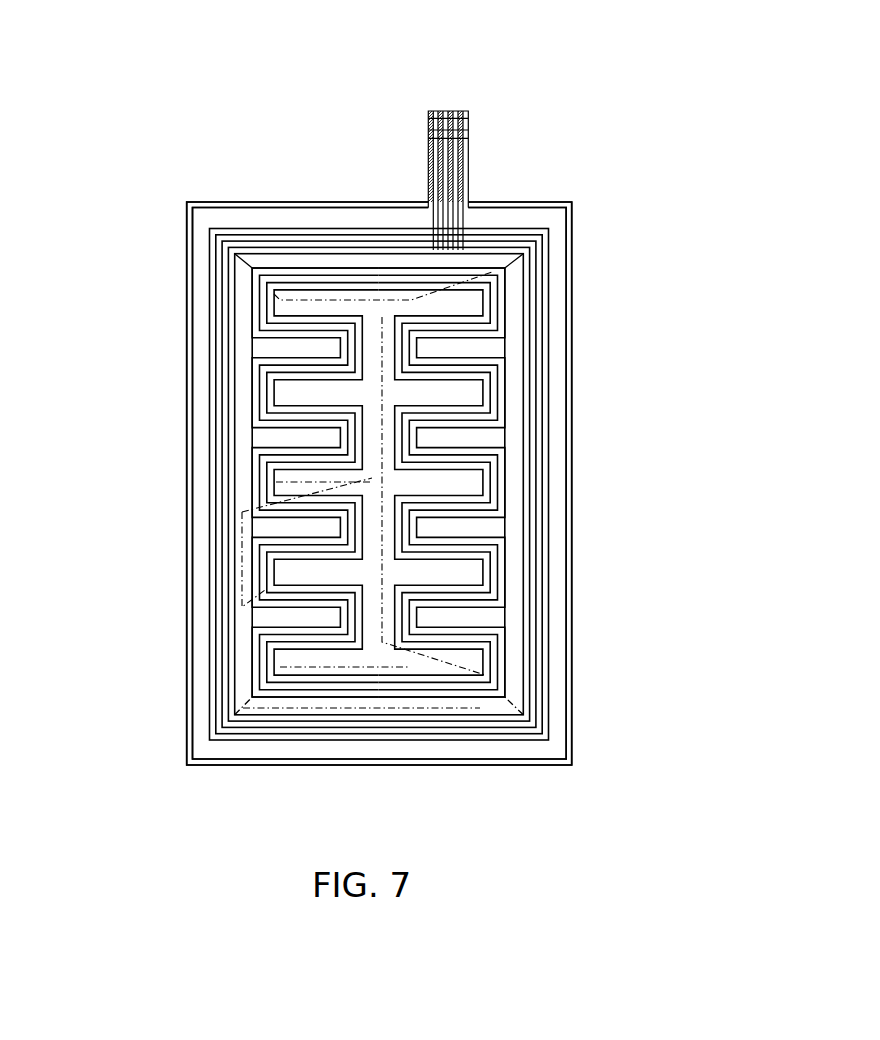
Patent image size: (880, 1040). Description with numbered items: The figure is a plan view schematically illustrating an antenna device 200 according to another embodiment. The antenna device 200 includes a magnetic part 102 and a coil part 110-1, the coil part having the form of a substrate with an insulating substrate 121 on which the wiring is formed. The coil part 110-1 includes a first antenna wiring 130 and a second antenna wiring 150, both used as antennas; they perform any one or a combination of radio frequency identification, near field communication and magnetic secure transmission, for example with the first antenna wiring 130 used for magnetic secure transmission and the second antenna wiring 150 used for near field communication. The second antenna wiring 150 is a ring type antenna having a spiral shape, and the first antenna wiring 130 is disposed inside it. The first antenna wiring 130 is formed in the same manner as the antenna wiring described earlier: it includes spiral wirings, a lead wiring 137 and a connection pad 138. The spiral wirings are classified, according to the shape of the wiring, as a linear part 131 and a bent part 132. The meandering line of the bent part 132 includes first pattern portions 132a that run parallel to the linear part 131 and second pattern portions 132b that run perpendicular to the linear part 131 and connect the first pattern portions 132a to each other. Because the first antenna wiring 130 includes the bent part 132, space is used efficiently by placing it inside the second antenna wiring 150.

The antenna device 200 is at (411, 51).
The magnetic part 102 is at (572, 595).
The coil part 110-1 is at (578, 697).
The insulating substrate 121 is at (558, 547).
The second antenna wiring 150 is at (560, 303).
The linear part 131 is at (295, 252).
The first antenna wiring 130 is at (497, 245).
The lead wiring 137 is at (428, 168).
The connection pad 138 is at (468, 130).
The bent part 132 is at (520, 470).
The first pattern portions 132a is at (268, 487).
The second pattern portions 132b is at (253, 557).